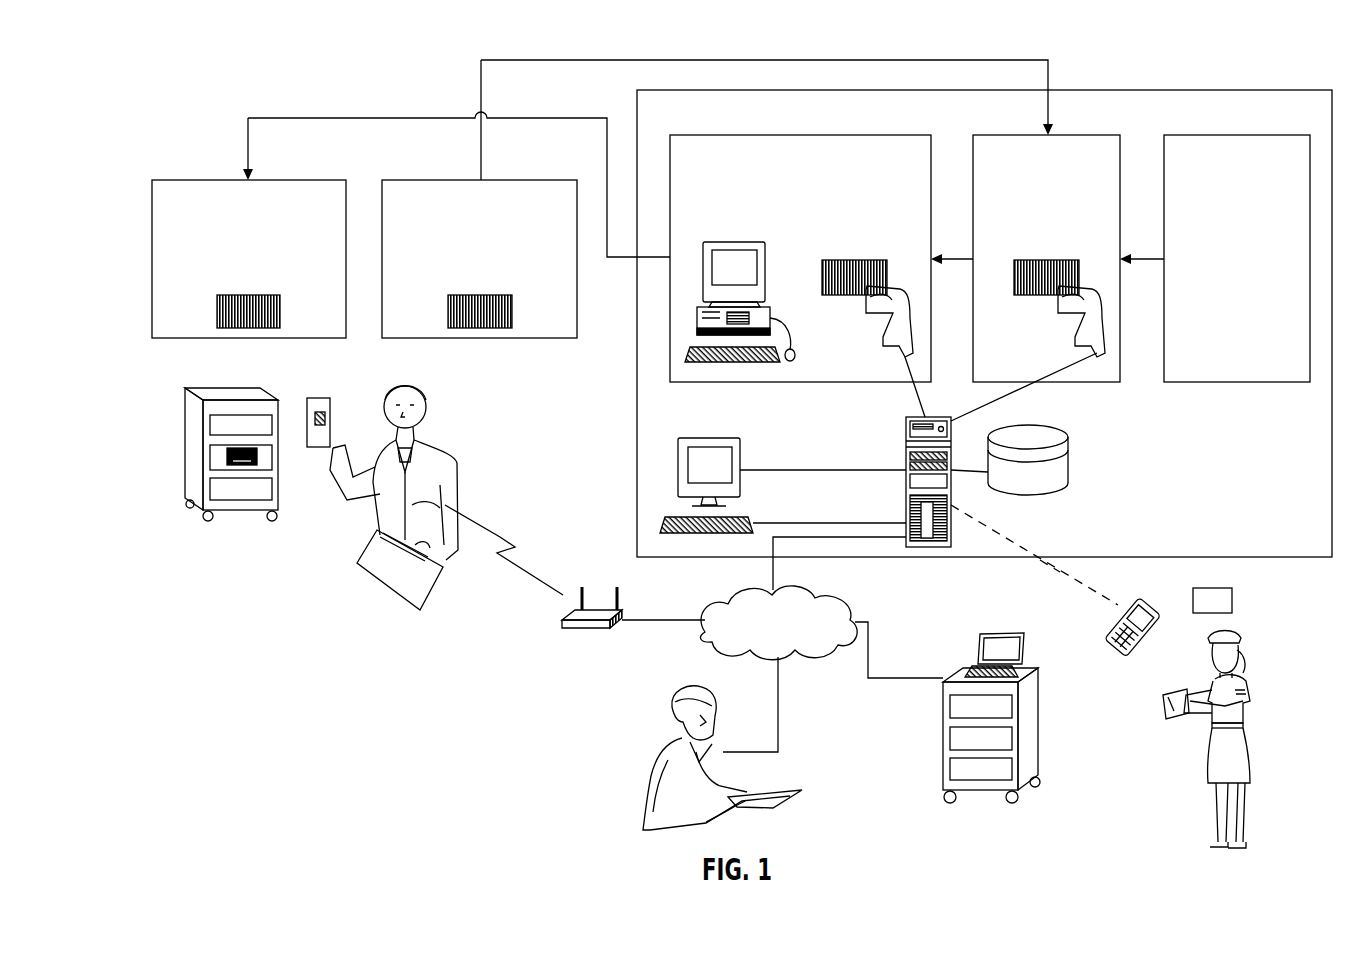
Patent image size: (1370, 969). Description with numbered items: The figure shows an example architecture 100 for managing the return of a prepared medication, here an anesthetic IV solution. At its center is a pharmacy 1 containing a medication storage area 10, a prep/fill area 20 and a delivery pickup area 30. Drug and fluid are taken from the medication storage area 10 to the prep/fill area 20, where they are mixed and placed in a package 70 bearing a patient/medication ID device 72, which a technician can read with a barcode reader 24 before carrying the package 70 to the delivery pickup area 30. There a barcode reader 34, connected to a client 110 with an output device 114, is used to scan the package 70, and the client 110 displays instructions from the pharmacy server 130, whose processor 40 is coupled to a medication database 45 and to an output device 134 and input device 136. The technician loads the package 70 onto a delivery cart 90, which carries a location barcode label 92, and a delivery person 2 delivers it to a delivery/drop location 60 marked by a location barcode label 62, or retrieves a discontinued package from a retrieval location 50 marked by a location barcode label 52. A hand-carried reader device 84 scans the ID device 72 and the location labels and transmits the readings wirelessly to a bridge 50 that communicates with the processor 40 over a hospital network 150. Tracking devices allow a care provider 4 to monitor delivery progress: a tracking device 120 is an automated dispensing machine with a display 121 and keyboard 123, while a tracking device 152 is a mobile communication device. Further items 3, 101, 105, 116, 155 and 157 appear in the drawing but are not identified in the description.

The architecture 100 is at (265, 80).
The pharmacy 1 is at (1283, 89).
The medication storage area 10 is at (1233, 134).
The prep/fill area 20 is at (1095, 134).
The barcode reader 24 is at (1058, 320).
The delivery pickup area 30 is at (800, 134).
The barcode reader 34 is at (870, 320).
The processor 40 is at (895, 420).
The medication database 45 is at (1072, 456).
The retrieval location 50 is at (415, 178).
The location barcode label 52 is at (447, 311).
The delivery/drop location 60 is at (181, 178).
The location barcode label 62 is at (216, 311).
The package 70 is at (324, 388).
The patient/medication ID device 72 is at (330, 418).
The reader device 84 is at (423, 590).
The delivery cart 90 is at (196, 425).
The location barcode label 92 is at (226, 457).
The delivery person 2 is at (437, 410).
The patient 3 is at (650, 700).
The care provider 4 is at (1270, 806).
The wireless communication link 101 is at (502, 536).
The wireless communication link to mobile device 105 is at (1030, 565).
The client 110 is at (782, 226).
The output device 114 is at (749, 256).
The computer keyboard 116 is at (730, 366).
The tracking device 120 is at (932, 772).
The display 121 is at (993, 635).
The keyboard 123 is at (972, 667).
The server 130 is at (1081, 540).
The output device 134 is at (678, 475).
The input device 136 is at (683, 535).
The hospital network 150 is at (855, 605).
The tracking device 152 is at (1242, 586).
The mobile device 155 is at (1110, 632).
The tag leader / badge 157 is at (1232, 610).